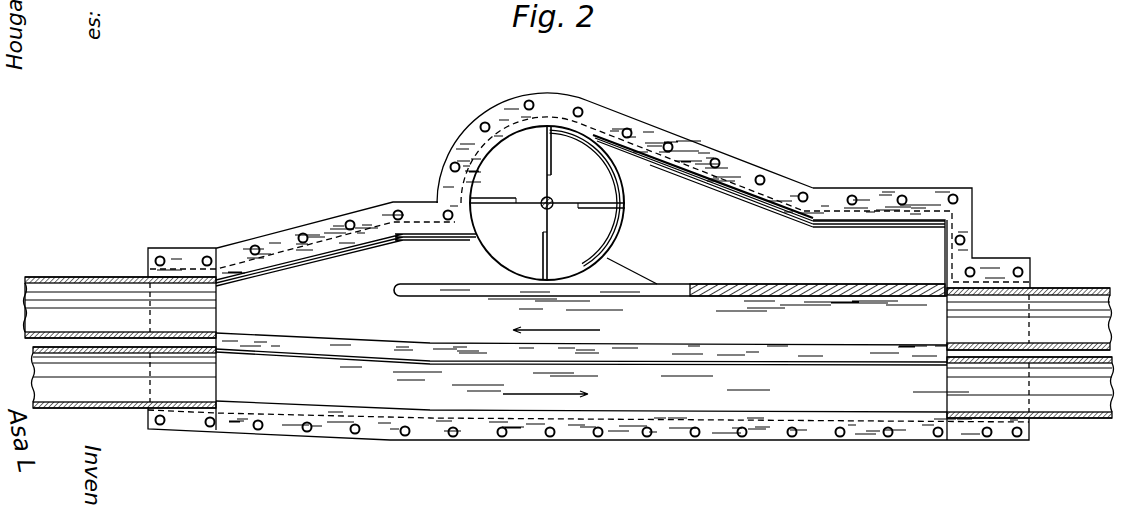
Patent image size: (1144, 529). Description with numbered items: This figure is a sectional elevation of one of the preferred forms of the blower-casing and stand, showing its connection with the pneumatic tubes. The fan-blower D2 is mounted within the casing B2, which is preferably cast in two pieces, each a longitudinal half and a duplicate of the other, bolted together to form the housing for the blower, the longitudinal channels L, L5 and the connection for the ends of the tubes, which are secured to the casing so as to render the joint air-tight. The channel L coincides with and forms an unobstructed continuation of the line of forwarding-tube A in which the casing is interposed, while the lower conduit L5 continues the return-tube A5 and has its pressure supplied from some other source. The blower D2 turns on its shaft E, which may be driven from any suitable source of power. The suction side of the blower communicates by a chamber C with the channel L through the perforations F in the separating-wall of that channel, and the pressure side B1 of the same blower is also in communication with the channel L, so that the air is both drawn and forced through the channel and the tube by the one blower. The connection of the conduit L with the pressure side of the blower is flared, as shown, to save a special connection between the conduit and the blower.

The forwarding-tube A is at (568, 300).
The return-tube A5 is at (1060, 428).
The pressure side of the blower B1 is at (404, 236).
The blower-casing B2 is at (589, 326).
The chamber C is at (670, 202).
The fan-blower D2 is at (548, 126).
The shaft E is at (541, 198).
The perforations F is at (816, 283).
The longitudinal channel L is at (581, 342).
The lower conduit L5 is at (592, 389).